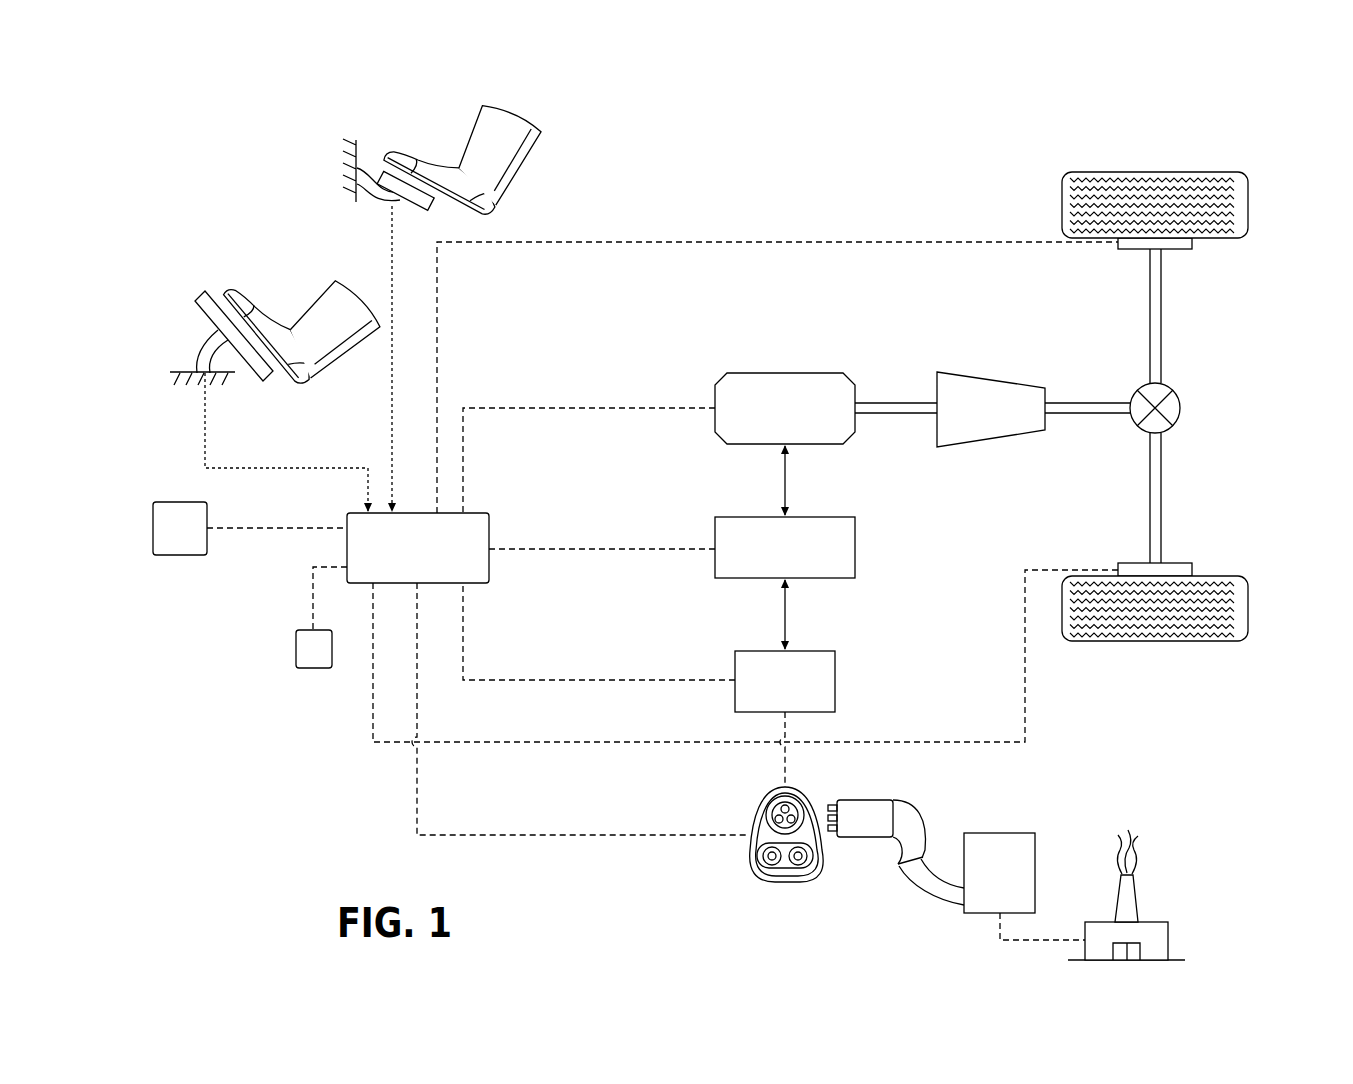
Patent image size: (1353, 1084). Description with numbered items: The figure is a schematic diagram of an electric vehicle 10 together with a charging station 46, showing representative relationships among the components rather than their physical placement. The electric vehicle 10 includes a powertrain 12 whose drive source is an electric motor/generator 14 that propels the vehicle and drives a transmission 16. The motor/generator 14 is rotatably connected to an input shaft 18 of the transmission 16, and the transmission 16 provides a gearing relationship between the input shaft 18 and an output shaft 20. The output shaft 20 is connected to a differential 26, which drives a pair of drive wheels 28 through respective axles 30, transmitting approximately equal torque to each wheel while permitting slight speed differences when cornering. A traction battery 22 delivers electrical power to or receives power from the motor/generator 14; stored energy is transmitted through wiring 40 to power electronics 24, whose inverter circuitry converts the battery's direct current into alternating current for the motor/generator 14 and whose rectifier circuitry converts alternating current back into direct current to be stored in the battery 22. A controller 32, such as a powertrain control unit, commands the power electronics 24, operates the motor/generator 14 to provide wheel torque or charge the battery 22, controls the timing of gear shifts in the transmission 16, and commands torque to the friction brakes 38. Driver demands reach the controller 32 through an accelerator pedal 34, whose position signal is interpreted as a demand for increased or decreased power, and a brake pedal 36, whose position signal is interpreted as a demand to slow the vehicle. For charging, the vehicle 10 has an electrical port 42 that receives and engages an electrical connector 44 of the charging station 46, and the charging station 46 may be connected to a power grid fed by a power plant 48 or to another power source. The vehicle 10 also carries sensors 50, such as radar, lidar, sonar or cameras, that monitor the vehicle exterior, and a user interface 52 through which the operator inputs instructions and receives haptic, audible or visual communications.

The electric vehicle 10 is at (958, 86).
The powertrain 12 is at (833, 297).
The electric motor/generator 14 is at (714, 395).
The transmission 16 is at (1000, 372).
The input shaft 18 is at (906, 400).
The output shaft 20 is at (1075, 400).
The traction battery 22 is at (734, 660).
The power electronics 24 is at (714, 533).
The differential 26 is at (1183, 408).
The drive wheels 28 is at (1150, 171).
The axles 30 is at (1163, 318).
The controller 32 is at (490, 528).
The accelerator pedal 34 is at (260, 272).
The brake pedal 36 is at (428, 110).
The friction brakes 38 is at (1193, 247).
The wiring 40 is at (788, 628).
The electrical port 42 is at (787, 882).
The electrical connector 44 is at (850, 800).
The charging station 46 is at (1036, 860).
The power plant 48 is at (1150, 922).
The sensors 50 is at (296, 650).
The user interface 52 is at (193, 500).